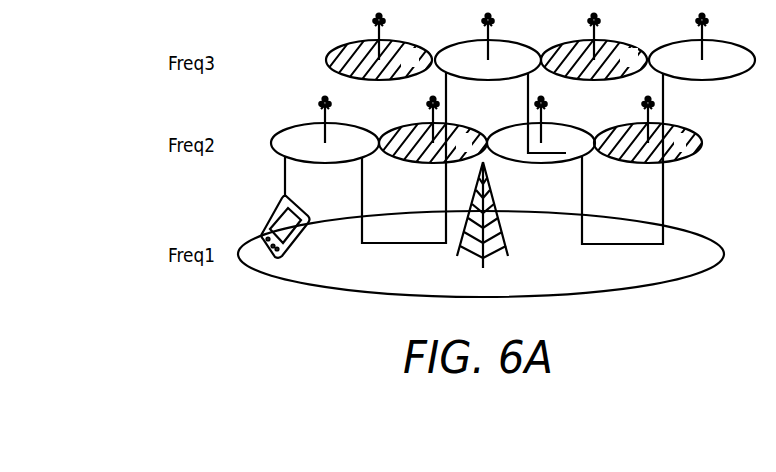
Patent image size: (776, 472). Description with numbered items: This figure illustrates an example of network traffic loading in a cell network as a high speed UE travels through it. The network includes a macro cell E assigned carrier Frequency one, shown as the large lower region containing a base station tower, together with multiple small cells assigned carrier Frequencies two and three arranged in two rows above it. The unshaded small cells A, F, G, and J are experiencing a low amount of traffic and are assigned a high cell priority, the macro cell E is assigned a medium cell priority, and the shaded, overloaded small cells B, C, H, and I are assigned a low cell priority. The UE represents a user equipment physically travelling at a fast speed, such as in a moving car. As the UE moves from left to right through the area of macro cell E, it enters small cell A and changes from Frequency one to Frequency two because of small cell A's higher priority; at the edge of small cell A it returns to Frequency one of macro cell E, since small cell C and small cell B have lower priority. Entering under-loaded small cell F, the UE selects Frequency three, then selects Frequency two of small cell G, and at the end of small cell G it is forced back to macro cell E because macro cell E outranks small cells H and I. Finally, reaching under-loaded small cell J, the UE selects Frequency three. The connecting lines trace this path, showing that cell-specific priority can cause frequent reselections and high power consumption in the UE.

The small cell A is at (325, 147).
The small cell B is at (377, 48).
The small cell C is at (431, 131).
The macro cell E is at (481, 229).
The small cell F is at (464, 129).
The small cell G is at (541, 130).
The small cell H is at (592, 48).
The small cell I is at (646, 131).
The small cell J is at (668, 129).
The element UE is at (293, 237).